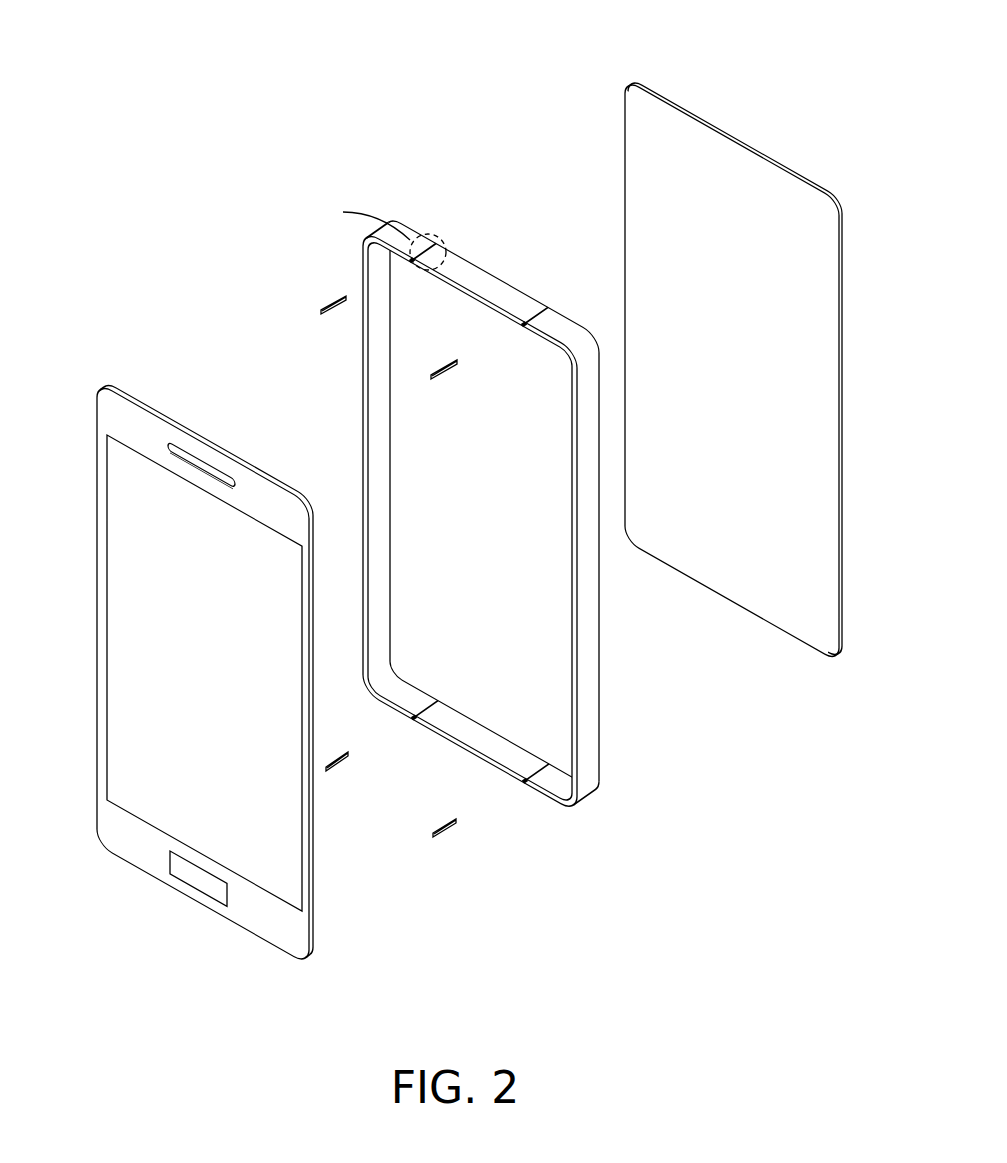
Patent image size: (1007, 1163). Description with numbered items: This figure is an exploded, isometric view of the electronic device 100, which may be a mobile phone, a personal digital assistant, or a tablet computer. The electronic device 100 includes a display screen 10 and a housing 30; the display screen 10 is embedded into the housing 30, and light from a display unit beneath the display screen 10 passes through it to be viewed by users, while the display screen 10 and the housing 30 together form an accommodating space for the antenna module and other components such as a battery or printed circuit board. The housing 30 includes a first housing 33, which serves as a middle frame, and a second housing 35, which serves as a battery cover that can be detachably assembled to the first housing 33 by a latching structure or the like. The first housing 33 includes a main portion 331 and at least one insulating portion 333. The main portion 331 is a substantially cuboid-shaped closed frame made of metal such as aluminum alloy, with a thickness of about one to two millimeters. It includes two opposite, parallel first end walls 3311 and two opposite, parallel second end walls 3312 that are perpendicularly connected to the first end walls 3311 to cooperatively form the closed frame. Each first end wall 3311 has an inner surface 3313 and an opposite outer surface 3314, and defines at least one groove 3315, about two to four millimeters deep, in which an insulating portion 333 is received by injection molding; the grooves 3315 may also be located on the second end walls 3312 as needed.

The electronic device 100 is at (393, 39).
The display screen 10 is at (117, 421).
The housing 30 is at (575, 137).
The first housing 33 is at (459, 226).
The second housing 35 is at (637, 227).
The main portion 331 is at (575, 622).
The first end wall 3311 is at (548, 782).
The second end wall 3312 is at (598, 737).
The inner surface 3313 is at (462, 737).
The outer surface 3314 is at (488, 288).
The groove 3315 is at (523, 782).
The insulating portion 333 is at (330, 303).